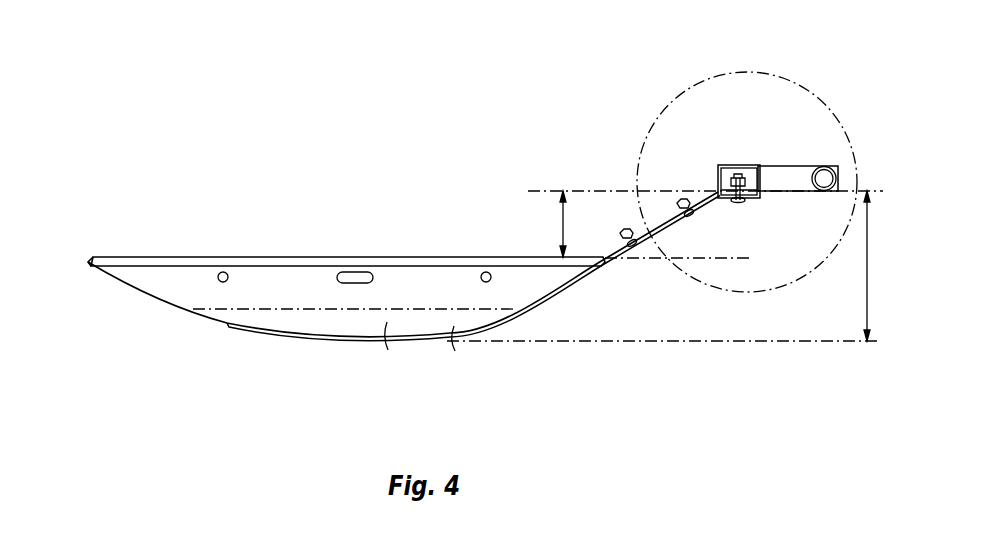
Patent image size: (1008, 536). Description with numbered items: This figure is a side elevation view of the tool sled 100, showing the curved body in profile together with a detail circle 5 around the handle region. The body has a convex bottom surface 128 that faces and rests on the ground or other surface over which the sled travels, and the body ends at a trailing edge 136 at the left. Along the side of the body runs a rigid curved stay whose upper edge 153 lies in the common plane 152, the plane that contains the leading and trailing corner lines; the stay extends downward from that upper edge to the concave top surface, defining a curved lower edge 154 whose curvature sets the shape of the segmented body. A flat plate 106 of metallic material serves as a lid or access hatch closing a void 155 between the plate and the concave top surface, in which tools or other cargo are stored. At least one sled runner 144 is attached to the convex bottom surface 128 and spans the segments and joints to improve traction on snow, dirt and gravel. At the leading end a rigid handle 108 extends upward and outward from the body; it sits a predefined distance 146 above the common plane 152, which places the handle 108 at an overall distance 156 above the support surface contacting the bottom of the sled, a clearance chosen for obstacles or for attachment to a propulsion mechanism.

The tool sled 100 is at (67, 98).
The upper edge 153 is at (162, 256).
The trailing edge 136 is at (92, 255).
The convex bottom surface 128 is at (160, 300).
The curved lower edge 154 is at (303, 336).
The void 155 is at (385, 325).
The flat plate 106 is at (276, 308).
The sled runner 144 is at (448, 339).
The common plane 152 is at (706, 259).
The predefined distance 146 is at (562, 222).
The overall distance 156 is at (866, 240).
The rigid handle 108 is at (770, 165).
The detail circle for FIG. 5 is at (734, 72).